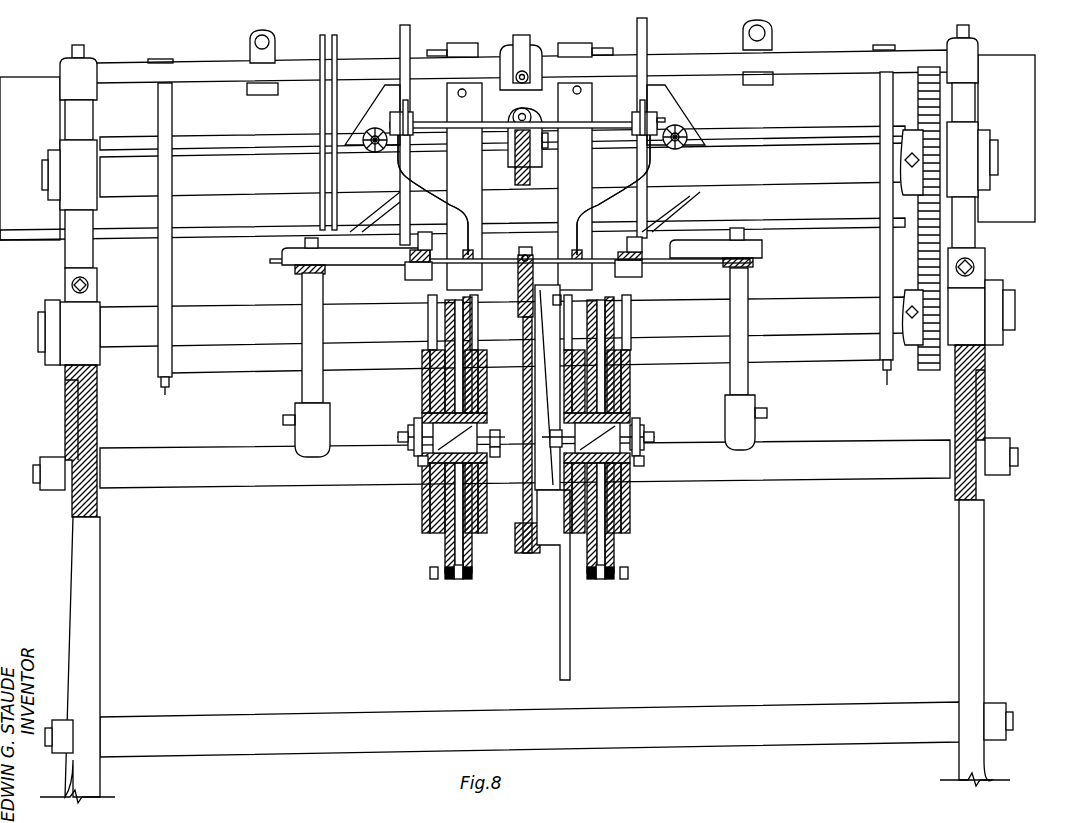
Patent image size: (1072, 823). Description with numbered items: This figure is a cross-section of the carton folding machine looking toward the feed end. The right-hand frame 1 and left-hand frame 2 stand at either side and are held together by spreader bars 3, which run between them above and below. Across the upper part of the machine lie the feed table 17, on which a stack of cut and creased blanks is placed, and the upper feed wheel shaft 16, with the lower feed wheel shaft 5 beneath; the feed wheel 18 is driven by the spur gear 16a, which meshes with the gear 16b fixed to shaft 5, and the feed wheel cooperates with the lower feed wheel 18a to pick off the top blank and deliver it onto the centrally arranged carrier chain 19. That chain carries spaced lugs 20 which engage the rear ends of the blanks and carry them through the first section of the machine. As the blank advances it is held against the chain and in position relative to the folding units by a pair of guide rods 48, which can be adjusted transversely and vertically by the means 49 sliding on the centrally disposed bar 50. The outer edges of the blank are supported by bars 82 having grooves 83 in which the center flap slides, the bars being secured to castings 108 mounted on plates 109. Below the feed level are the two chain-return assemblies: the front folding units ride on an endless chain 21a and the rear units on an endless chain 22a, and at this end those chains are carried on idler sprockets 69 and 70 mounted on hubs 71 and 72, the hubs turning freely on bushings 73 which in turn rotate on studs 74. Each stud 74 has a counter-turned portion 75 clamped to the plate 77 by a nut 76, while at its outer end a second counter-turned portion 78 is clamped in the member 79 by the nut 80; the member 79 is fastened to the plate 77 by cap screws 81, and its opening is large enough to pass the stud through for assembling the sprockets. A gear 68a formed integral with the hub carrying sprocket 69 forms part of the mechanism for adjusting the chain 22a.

The right-hand frame 1 is at (87, 605).
The left-hand frame 2 is at (975, 555).
The spreader bar 3 is at (793, 465).
The lower feed wheel shaft 5 is at (755, 323).
The upper feed wheel shaft 16 is at (778, 170).
The spur gear 16a is at (935, 95).
The gear 16b is at (922, 372).
The feed table 17 is at (522, 78).
The feed wheel 18 is at (583, 48).
The lower feed wheel 18a is at (468, 272).
The carrier chain 19 is at (518, 528).
The lug 20 is at (526, 258).
The endless chain 21a is at (445, 580).
The endless chain 22a is at (466, 582).
The guide rod 48 is at (398, 153).
The adjusting means 49 is at (398, 125).
The centrally disposed bar 50 is at (530, 152).
The gear 68a is at (432, 545).
The idler sprocket 69 is at (450, 580).
The idler sprocket 70 is at (462, 578).
The hub 71 is at (445, 375).
The hub 72 is at (560, 408).
The bushing 73 is at (415, 462).
The stud 74 is at (450, 458).
The counter-turned portion 75 is at (550, 455).
The nut 76 is at (500, 442).
The plate 77 is at (590, 353).
The counter-turned portion 78 is at (412, 445).
The member 79 is at (414, 430).
The nut 80 is at (398, 437).
The cap screw 81 is at (420, 458).
The bar 82 is at (408, 282).
The groove 83 is at (422, 270).
The casting 108 is at (284, 256).
The plate 109 is at (278, 264).